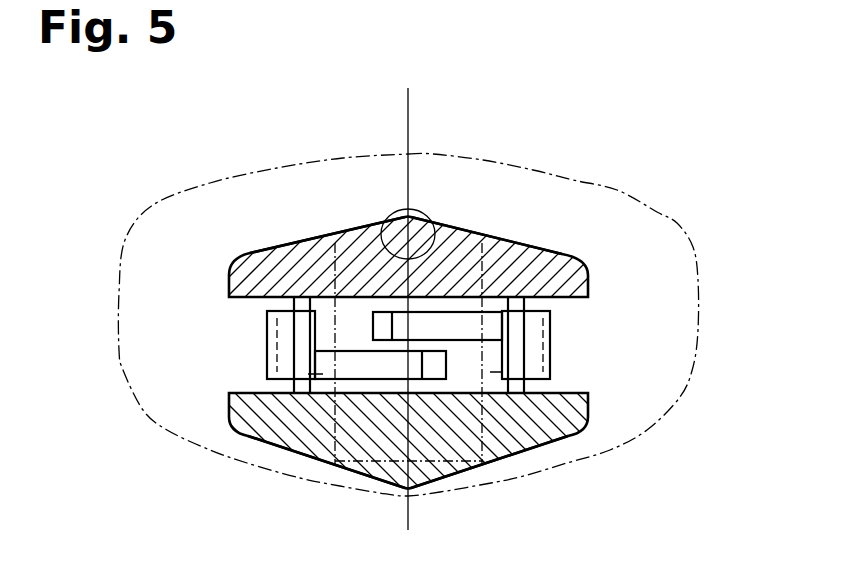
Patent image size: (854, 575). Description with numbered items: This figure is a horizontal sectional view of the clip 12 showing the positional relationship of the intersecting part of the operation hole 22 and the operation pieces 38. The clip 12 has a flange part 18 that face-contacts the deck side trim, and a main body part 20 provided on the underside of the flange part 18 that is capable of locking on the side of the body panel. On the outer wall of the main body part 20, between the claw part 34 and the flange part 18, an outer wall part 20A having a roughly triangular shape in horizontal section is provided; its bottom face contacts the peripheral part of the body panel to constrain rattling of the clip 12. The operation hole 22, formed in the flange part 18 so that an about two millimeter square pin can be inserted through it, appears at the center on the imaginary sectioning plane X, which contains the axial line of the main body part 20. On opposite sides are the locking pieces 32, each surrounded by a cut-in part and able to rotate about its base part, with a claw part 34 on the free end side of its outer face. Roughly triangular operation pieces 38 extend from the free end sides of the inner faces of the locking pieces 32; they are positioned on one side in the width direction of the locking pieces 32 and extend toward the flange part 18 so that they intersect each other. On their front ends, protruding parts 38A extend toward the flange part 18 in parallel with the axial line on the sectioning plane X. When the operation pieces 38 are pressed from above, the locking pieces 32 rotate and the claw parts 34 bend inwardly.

The clip 12 is at (618, 178).
The flange part 18 is at (685, 293).
The main body part 20 is at (583, 257).
The outer wall part 20A is at (512, 247).
The operation hole 22 is at (437, 211).
The locking piece 32 is at (262, 357).
The claw part 34 is at (280, 333).
The operation piece 38 is at (357, 367).
The protruding part 38A is at (383, 325).
The imaginary sectioning plane X is at (410, 138).